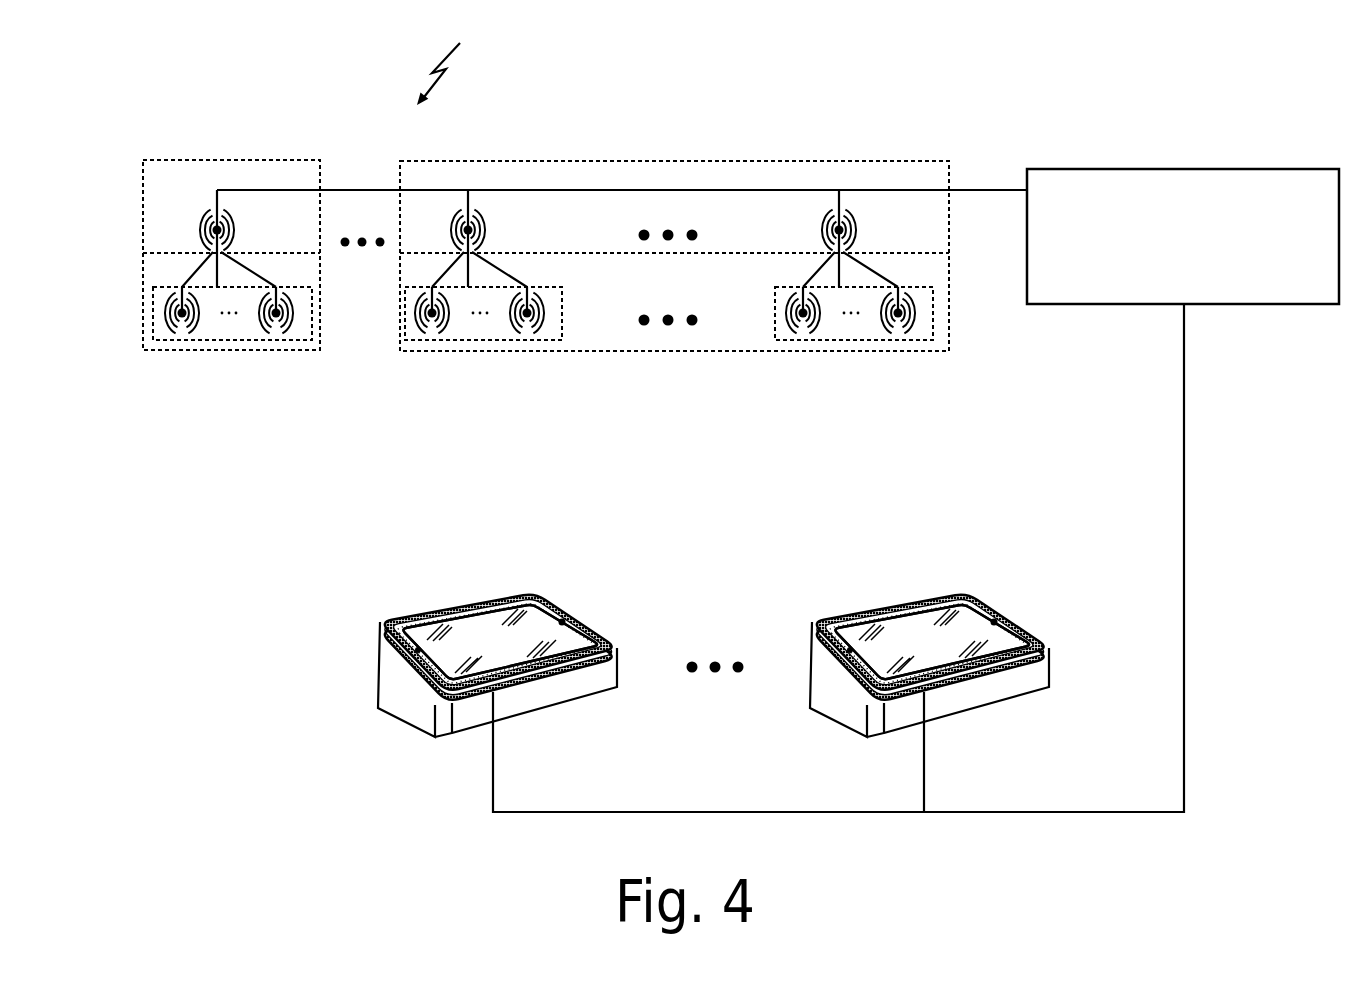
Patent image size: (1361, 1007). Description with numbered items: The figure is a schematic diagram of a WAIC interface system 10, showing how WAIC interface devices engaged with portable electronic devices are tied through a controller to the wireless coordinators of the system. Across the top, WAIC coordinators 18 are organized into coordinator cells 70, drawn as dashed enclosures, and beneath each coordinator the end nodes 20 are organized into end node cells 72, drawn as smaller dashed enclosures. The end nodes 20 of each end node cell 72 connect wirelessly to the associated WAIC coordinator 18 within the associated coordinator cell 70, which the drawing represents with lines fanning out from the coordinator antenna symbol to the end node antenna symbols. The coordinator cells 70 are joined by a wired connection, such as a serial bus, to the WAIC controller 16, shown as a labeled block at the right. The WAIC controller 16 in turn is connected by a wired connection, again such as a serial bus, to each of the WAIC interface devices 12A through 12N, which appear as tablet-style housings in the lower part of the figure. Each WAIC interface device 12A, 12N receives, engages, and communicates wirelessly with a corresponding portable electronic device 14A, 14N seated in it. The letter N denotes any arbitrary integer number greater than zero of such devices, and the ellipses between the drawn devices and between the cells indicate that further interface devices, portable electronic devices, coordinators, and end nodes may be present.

The WAIC interface system 10 is at (454, 60).
The coordinator cell 70 is at (587, 160).
The WAIC coordinator 18 is at (900, 210).
The end node 20 is at (928, 384).
The end node cell 72 is at (783, 397).
The WAIC controller 16 is at (1170, 288).
The WAIC interface device 12A is at (380, 620).
The portable electronic device 14A is at (532, 618).
The WAIC interface device 12N is at (812, 620).
The portable electronic device 14N is at (967, 622).